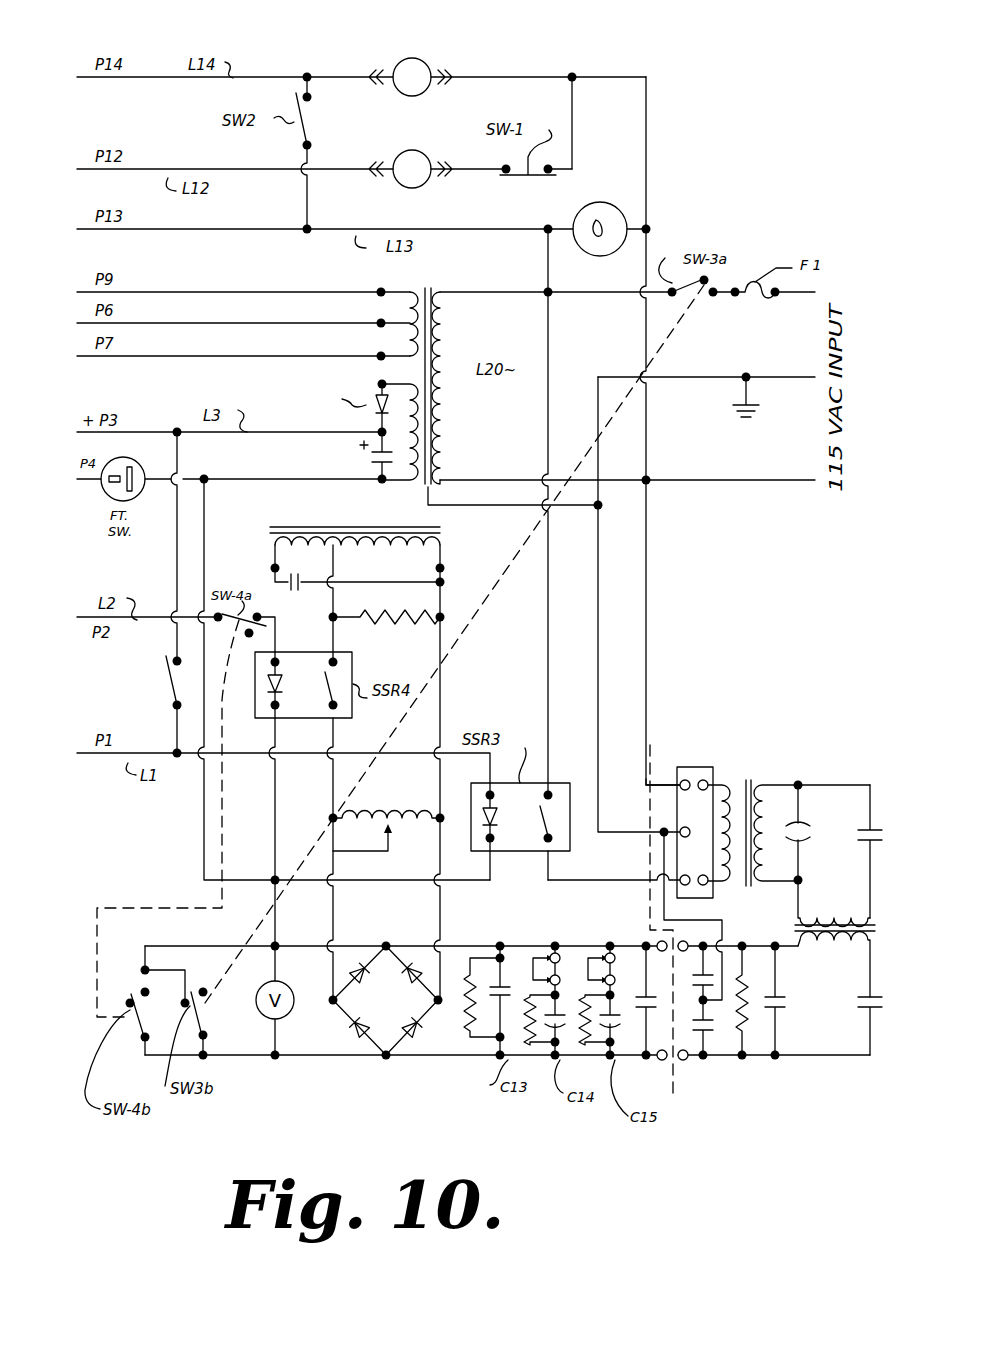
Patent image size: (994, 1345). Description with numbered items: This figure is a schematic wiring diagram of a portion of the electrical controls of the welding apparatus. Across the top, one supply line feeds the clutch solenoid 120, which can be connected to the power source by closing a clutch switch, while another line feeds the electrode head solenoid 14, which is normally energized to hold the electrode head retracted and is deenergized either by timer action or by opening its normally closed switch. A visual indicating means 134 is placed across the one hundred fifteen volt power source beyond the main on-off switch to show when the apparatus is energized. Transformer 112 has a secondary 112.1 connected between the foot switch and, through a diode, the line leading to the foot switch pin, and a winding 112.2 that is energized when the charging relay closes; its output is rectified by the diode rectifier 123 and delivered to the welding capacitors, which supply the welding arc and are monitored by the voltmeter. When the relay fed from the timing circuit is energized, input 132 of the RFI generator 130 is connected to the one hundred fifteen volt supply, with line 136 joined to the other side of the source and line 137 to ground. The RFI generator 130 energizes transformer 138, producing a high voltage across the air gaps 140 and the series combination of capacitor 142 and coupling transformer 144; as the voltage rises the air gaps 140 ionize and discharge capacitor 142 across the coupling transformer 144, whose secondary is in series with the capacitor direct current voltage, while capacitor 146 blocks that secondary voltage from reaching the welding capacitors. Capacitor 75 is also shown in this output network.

The clutch solenoid 120 is at (412, 58).
The electrode head solenoid 14 is at (403, 187).
The visual indicating means 134 is at (626, 185).
The transformer 112 is at (514, 513).
The secondary 112.1 is at (421, 482).
The winding 112.2 is at (355, 541).
The line 137 is at (600, 590).
The line 136 is at (662, 776).
The RFI generator 130 is at (697, 767).
The input 132 is at (692, 889).
The transformer 138 is at (752, 778).
The air gaps 140 is at (805, 815).
The capacitor 142 is at (858, 847).
The coupling transformer 144 is at (798, 930).
The capacitor 75 is at (856, 1004).
The capacitor 146 is at (795, 1005).
The diode rectifier 123 is at (350, 1062).